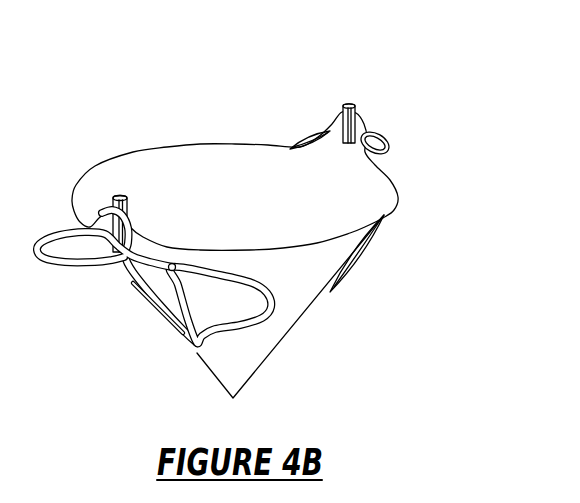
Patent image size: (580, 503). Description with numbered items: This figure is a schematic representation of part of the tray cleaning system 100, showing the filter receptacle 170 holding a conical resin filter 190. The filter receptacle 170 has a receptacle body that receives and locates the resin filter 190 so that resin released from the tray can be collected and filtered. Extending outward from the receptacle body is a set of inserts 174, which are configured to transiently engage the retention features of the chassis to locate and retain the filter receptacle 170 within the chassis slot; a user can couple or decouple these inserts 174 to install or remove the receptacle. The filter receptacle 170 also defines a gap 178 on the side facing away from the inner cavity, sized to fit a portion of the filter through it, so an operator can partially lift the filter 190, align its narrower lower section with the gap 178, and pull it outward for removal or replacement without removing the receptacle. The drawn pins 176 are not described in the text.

The tray cleaning system 100 is at (247, 202).
The filter receptacle 170 is at (247, 202).
The set of inserts 174 is at (47, 248).
The pins 176 is at (125, 192).
The gap 178 is at (303, 297).
The resin filter 190 is at (245, 200).